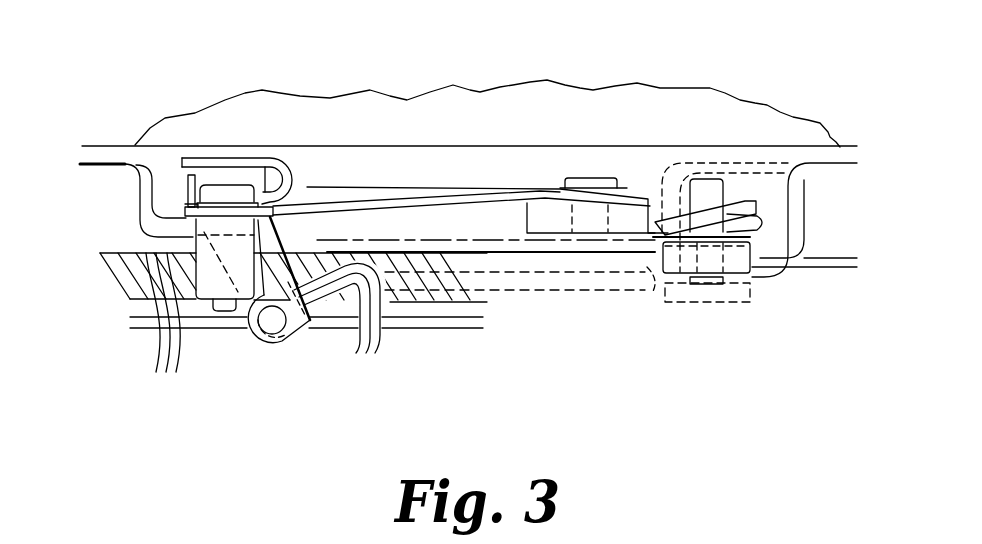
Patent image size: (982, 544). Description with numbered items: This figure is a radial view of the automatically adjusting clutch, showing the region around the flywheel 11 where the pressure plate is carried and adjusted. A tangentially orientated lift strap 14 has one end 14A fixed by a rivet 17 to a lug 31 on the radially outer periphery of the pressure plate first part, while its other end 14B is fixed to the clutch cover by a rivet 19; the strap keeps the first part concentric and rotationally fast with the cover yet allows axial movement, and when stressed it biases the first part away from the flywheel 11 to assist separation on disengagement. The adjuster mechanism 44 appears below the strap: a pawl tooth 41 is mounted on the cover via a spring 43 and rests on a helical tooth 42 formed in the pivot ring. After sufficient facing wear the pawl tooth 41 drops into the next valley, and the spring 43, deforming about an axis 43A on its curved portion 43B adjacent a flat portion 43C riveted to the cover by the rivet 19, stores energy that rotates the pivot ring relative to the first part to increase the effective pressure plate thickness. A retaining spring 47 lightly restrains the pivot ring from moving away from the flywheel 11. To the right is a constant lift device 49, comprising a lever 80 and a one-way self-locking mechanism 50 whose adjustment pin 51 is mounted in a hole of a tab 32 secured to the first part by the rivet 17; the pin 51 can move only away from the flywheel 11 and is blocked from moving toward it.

The flywheel 11 is at (515, 107).
The lift strap 14 is at (473, 185).
The strap end 14A is at (512, 186).
The strap other end 14B is at (311, 200).
The rivet 17 is at (595, 176).
The rivet 19 is at (222, 190).
The lug 31 is at (632, 213).
The tab 32 is at (553, 254).
The pawl tooth 41 is at (348, 322).
The helical tooth 42 is at (163, 331).
The spring 43 is at (207, 182).
The axis 43A is at (294, 195).
The curved portion 43B is at (275, 156).
The flat portion 43C is at (218, 212).
The adjuster mechanism 44 is at (284, 358).
The retaining spring 47 is at (226, 314).
The constant lift device 49 is at (722, 304).
The one-way self-locking mechanism 50 is at (735, 190).
The adjustment pin 51 is at (703, 186).
The lever 80 is at (755, 298).